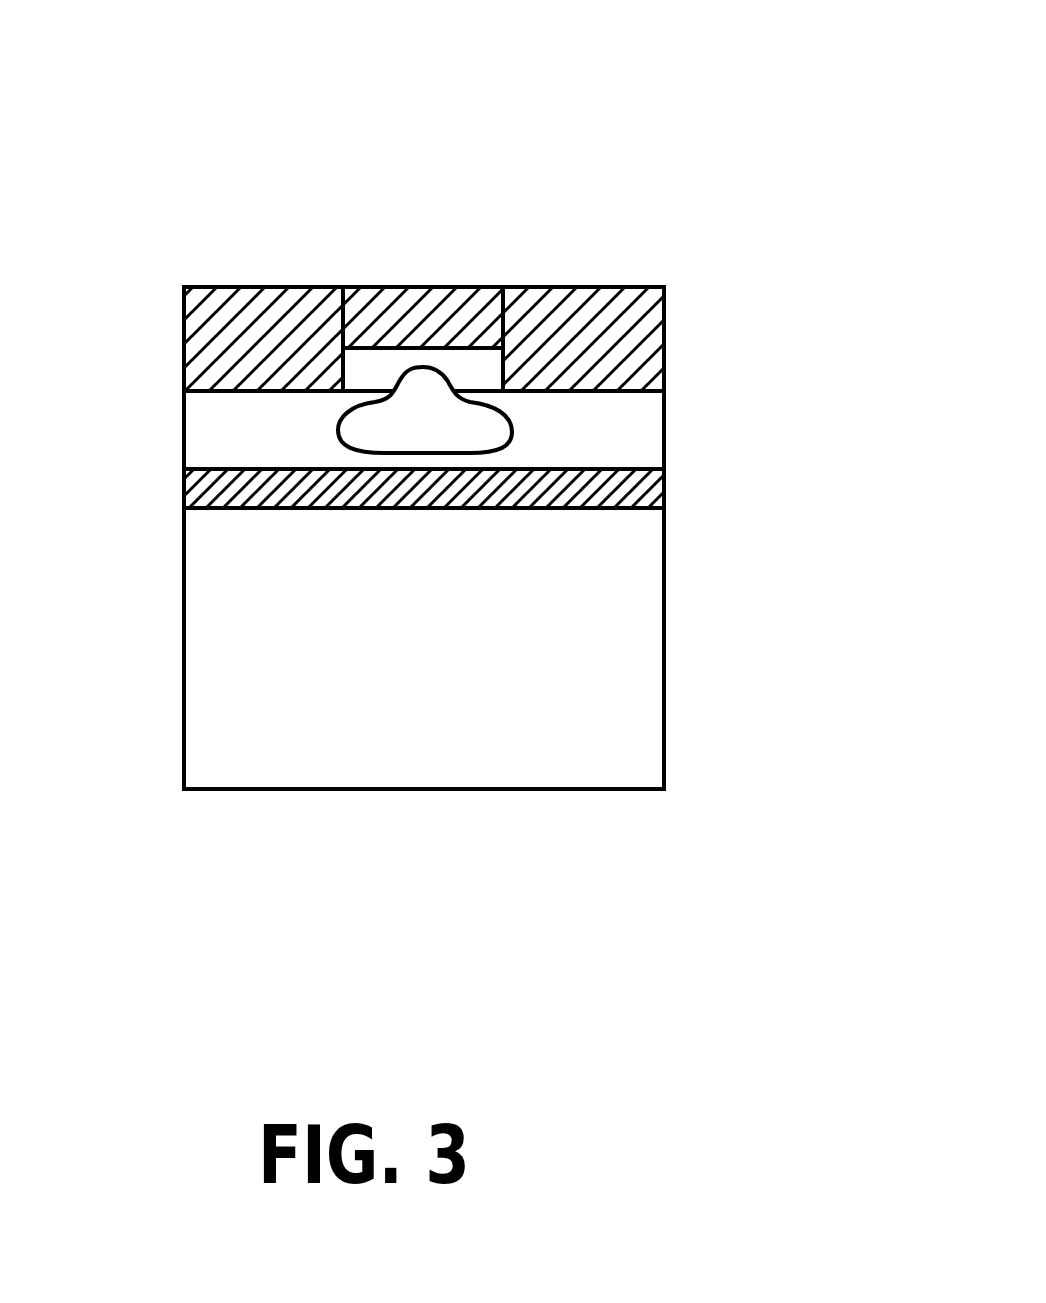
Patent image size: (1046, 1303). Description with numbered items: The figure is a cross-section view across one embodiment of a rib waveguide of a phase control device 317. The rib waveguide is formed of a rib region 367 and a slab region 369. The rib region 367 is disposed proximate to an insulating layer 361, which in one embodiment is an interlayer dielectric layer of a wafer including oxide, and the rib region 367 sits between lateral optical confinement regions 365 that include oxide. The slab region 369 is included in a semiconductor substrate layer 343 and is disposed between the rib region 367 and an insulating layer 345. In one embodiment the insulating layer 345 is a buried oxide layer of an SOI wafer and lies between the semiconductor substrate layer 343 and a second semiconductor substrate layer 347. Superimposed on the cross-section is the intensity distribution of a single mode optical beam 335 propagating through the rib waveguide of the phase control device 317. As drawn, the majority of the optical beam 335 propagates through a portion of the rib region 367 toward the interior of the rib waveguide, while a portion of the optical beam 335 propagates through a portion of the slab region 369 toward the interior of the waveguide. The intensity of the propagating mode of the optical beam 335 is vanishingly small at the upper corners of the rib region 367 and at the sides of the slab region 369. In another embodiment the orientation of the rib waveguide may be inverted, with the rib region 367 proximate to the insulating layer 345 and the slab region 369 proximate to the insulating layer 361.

The phase control device 317 is at (904, 35).
The single mode optical beam 335 is at (338, 433).
The semiconductor substrate layer 343 is at (664, 440).
The insulating layer 345 is at (664, 493).
The semiconductor substrate layer 347 is at (665, 682).
The insulating layer 361 is at (471, 305).
The lateral optical confinement regions 365 is at (226, 330).
The rib region 367 is at (365, 360).
The slab region 369 is at (632, 422).